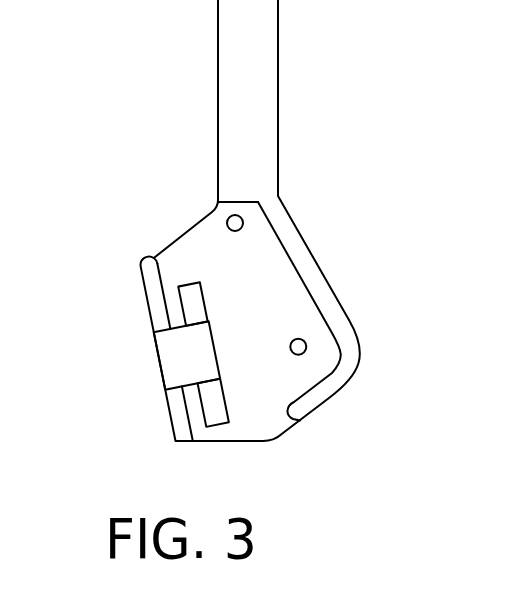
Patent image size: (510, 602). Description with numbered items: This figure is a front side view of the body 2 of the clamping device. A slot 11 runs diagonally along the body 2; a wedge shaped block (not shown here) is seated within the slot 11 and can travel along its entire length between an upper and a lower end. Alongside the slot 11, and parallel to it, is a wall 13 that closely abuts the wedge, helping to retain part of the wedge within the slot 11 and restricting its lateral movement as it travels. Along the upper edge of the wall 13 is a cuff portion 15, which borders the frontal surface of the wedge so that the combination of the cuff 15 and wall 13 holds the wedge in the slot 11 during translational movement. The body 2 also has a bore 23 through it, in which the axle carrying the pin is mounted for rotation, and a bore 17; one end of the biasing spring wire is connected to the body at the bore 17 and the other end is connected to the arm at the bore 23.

The body 2 is at (161, 190).
The slot 11 is at (215, 410).
The wall 13 is at (178, 423).
The cuff portion 15 is at (187, 355).
The bore 17 is at (242, 218).
The bore 23 is at (306, 339).